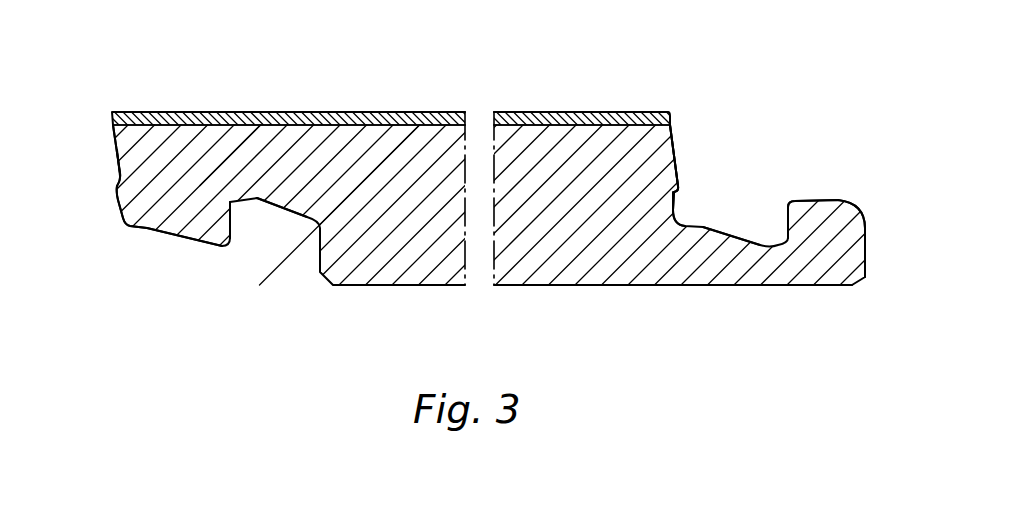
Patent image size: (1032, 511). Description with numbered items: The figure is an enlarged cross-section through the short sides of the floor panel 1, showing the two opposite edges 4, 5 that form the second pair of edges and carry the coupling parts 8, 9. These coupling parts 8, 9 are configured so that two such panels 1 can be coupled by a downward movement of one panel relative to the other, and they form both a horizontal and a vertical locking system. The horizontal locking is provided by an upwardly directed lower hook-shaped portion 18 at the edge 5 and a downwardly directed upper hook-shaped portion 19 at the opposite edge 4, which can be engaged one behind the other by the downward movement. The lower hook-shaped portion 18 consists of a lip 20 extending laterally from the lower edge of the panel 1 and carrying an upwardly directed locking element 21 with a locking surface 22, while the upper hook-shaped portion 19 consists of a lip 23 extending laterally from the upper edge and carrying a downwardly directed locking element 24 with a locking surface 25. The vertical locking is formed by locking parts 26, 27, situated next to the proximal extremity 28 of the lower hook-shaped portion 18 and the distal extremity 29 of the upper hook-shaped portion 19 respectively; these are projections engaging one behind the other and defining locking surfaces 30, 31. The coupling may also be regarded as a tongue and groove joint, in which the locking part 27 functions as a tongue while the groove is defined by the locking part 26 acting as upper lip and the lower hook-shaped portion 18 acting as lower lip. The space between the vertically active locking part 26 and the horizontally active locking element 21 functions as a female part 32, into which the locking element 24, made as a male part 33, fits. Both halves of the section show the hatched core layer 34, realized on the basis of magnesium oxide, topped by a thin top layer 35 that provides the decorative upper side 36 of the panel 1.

The panel 1 is at (503, 240).
The edge 4 is at (167, 276).
The edge 5 is at (857, 307).
The coupling part 8 is at (103, 142).
The coupling part 9 is at (772, 143).
The lower hook-shaped portion 18 is at (742, 270).
The upper hook-shaped portion 19 is at (264, 230).
The lip 20 is at (733, 243).
The locking element 21 is at (824, 226).
The locking surface 22 is at (788, 227).
The lip 23 is at (243, 157).
The locking element 24 is at (128, 228).
The locking surface 25 is at (231, 226).
The locking part 26 is at (678, 187).
The locking part 27 is at (113, 204).
The proximal extremity 28 is at (695, 210).
The distal extremity 29 is at (103, 184).
The locking surface 30 is at (680, 188).
The locking surface 31 is at (120, 178).
The female part 32 is at (781, 177).
The male part 33 is at (140, 238).
The core layer 34 is at (388, 232).
The top layer 35 is at (359, 116).
The decorative upper side 36 is at (547, 114).